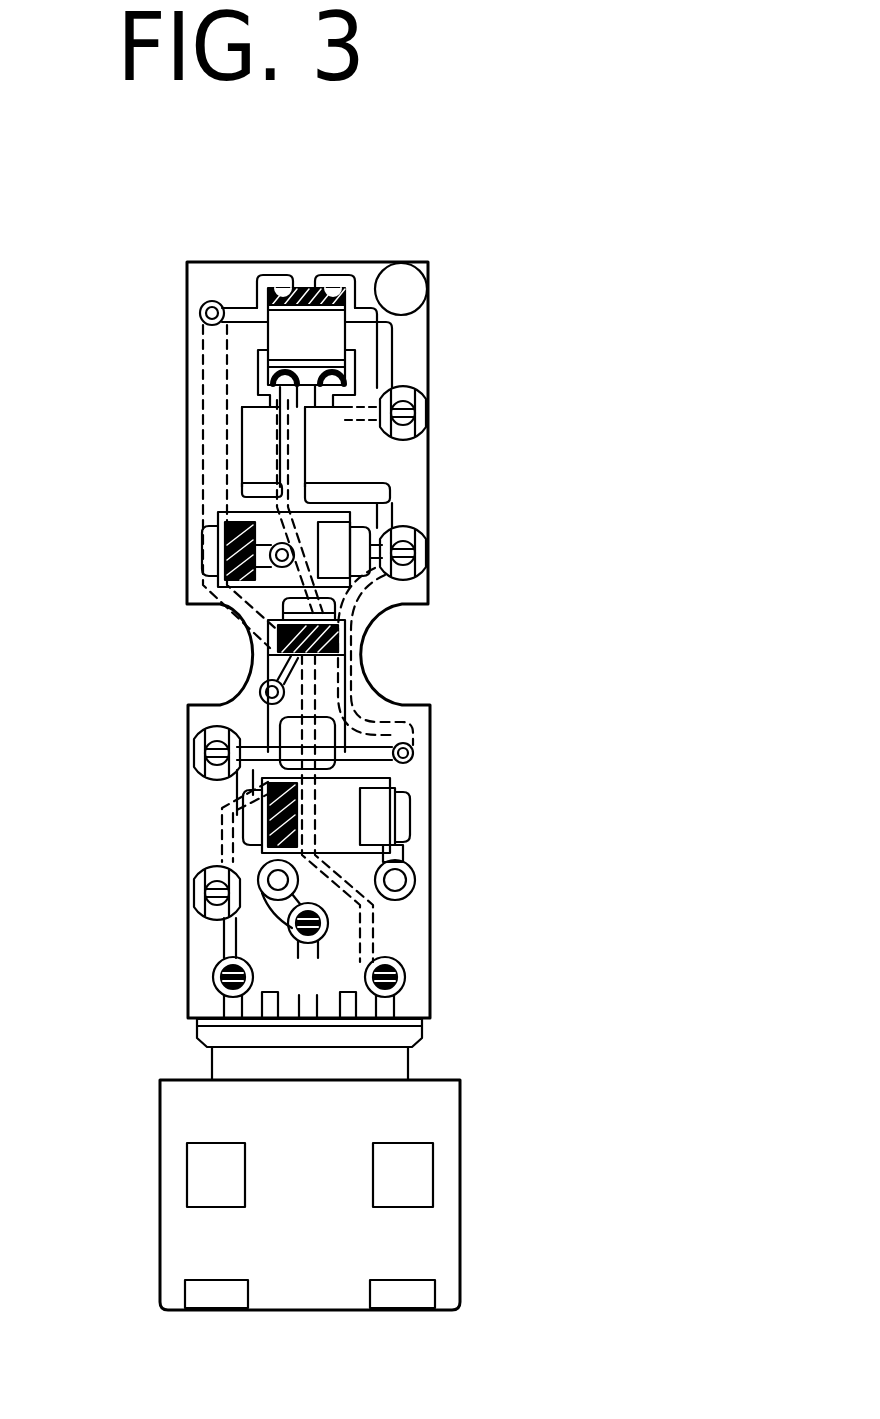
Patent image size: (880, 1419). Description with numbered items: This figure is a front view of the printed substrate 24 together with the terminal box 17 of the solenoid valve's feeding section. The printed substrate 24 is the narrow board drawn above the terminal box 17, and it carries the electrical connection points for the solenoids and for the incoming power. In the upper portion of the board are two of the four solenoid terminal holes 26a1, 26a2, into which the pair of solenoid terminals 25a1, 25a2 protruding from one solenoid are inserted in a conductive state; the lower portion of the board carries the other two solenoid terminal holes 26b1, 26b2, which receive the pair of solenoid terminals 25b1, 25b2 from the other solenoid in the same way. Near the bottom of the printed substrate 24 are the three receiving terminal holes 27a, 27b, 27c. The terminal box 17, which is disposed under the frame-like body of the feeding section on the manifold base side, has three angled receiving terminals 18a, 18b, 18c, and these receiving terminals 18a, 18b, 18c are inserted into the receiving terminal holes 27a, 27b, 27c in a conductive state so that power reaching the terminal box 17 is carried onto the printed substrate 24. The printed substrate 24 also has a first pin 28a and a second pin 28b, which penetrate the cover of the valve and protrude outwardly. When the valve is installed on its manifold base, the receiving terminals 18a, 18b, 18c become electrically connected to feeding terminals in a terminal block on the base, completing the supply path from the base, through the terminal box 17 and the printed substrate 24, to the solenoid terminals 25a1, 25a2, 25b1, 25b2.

The terminal box 17 is at (462, 1220).
The printed substrate 24 is at (228, 273).
The solenoid terminal 25a1 is at (425, 392).
The solenoid terminal 25a2 is at (430, 598).
The solenoid terminal 25b1 is at (200, 905).
The solenoid terminal 25b2 is at (200, 747).
The solenoid terminal hole 26a1 is at (421, 414).
The solenoid terminal hole 26a2 is at (428, 548).
The solenoid terminal hole 26b1 is at (200, 888).
The solenoid terminal hole 26b2 is at (198, 757).
The receiving terminal hole 27a is at (325, 935).
The receiving terminal hole 27b is at (400, 990).
The receiving terminal hole 27c is at (210, 978).
The receiving terminal 18a is at (325, 928).
The receiving terminal 18b is at (402, 972).
The receiving terminal 18c is at (215, 990).
The first pin 28a is at (275, 888).
The second pin 28b is at (402, 858).